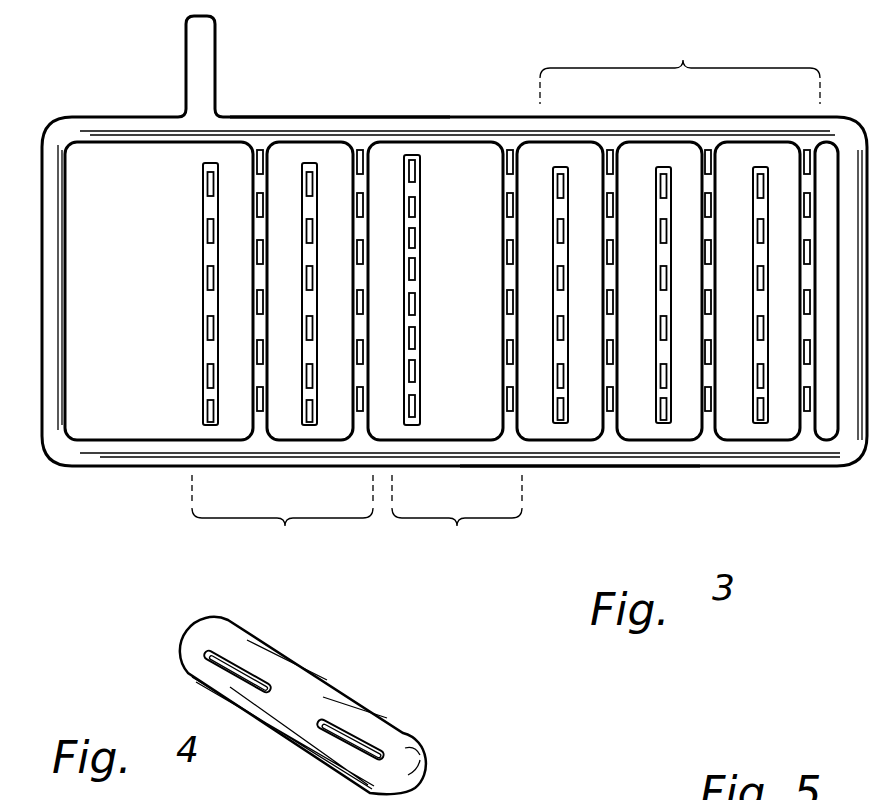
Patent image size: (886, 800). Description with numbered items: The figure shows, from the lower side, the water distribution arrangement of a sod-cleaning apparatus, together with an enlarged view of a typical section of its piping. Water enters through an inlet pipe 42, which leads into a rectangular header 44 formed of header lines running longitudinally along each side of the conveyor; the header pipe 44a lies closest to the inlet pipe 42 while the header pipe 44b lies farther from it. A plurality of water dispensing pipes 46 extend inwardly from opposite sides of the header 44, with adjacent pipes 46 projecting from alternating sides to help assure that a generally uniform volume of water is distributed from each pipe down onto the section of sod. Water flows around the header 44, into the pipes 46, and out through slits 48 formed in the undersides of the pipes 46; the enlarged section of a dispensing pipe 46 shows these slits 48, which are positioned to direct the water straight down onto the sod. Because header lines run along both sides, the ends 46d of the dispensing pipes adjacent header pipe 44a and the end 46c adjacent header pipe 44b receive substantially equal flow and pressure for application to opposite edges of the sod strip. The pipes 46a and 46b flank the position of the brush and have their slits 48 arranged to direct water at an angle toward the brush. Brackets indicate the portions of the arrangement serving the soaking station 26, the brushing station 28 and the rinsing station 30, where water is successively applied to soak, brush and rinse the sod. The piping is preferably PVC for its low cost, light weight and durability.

In FIG. 3, the soaking station 26 is at (680, 68).
In FIG. 3, the brushing station 28 is at (457, 520).
In FIG. 3, the rinsing station 30 is at (282, 520).
In FIG. 3, the inlet pipe 42 is at (216, 50).
In FIG. 3, the rectangular header 44 is at (442, 118).
In FIG. 3, the header pipe 44a is at (340, 118).
In FIG. 3, the header pipe 44b is at (573, 460).
In FIG. 3, the water dispensing pipes 46 is at (355, 372).
In FIG. 4, the water dispensing pipes 46 is at (313, 690).
In FIG. 3, the dispensing pipe 46a is at (421, 186).
In FIG. 3, the dispensing pipe 46b is at (509, 190).
In FIG. 3, the end of water dispensing pipe 46c is at (614, 422).
In FIG. 3, the ends of water dispensing pipes 46d is at (558, 186).
In FIG. 3, the slits 48 is at (207, 268).
In FIG. 4, the slits 48 is at (240, 670).